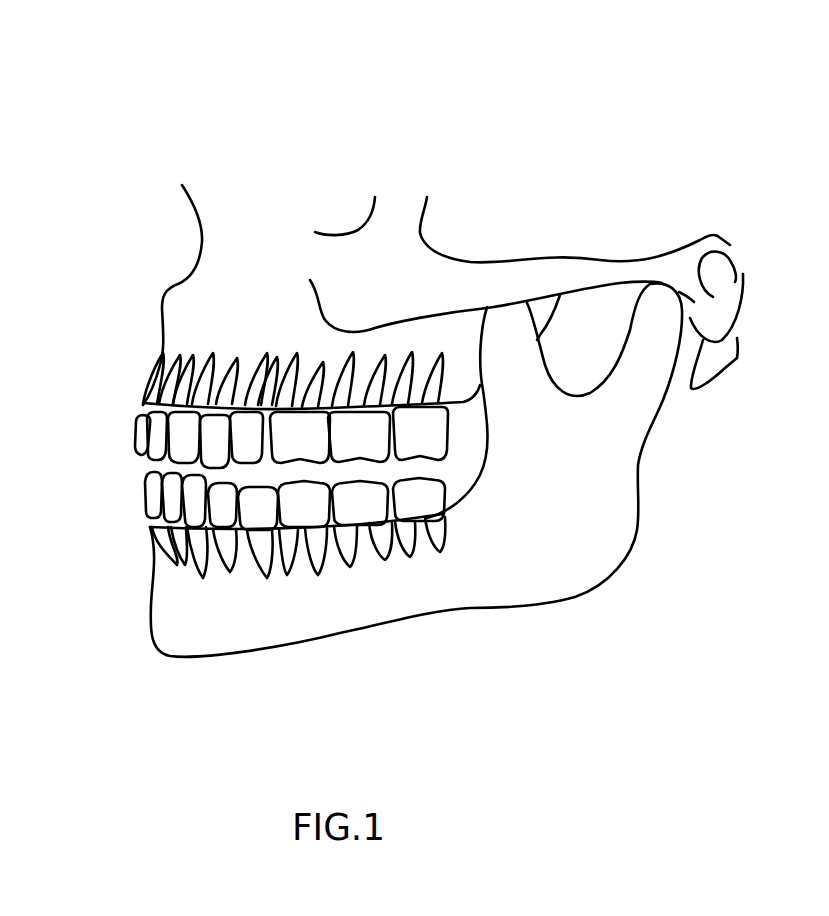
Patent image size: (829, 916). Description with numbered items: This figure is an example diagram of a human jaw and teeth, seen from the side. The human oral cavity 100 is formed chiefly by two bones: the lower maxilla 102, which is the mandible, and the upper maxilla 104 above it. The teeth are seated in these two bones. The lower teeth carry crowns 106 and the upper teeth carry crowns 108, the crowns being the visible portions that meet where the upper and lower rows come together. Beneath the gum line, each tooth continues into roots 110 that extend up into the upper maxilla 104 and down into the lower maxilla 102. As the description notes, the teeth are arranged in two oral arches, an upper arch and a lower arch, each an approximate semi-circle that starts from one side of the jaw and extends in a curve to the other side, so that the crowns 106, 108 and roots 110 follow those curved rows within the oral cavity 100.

The human oral cavity 100 is at (149, 72).
The lower maxilla 102 is at (427, 585).
The upper maxilla 104 is at (185, 316).
The crowns of the lower teeth 106 is at (157, 490).
The crowns of the upper teeth 108 is at (160, 430).
The roots 110 is at (195, 567).